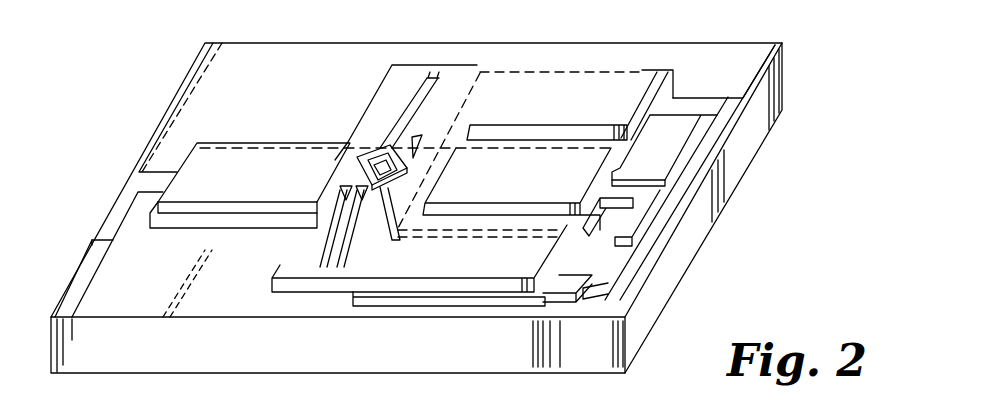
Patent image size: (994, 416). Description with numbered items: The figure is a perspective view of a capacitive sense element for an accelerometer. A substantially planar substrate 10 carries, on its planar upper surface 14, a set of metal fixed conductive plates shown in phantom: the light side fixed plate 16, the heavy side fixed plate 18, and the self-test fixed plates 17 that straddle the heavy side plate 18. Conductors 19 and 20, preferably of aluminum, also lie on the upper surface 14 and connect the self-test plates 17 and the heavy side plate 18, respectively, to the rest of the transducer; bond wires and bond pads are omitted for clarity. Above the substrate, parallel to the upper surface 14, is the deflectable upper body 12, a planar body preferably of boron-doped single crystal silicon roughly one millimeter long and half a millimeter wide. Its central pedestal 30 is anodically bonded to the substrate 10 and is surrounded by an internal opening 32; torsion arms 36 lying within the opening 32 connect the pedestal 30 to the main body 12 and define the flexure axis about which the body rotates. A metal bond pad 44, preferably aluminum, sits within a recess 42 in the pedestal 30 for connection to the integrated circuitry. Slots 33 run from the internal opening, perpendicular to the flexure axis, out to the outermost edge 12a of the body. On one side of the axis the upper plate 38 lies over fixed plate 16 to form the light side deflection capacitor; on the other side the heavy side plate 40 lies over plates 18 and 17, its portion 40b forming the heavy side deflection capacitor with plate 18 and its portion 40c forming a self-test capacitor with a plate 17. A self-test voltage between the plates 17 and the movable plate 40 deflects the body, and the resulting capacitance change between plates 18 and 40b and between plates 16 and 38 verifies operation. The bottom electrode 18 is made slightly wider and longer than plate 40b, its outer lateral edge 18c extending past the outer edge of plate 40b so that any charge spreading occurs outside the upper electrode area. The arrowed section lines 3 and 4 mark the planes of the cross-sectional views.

The substrate 10 is at (656, 320).
The deflectable upper body 12 is at (385, 78).
The outermost edge of the deflectable upper body 12a is at (652, 128).
The upper surface of substrate 14 is at (100, 297).
The fixed conductive plate (light side) 16 is at (301, 137).
The self-test fixed conductive plates 17 is at (527, 300).
The fixed conductive plate (heavy side) 18 is at (690, 125).
The outer lateral edge of bottom electrode 18c is at (600, 190).
The conductor 19 is at (597, 283).
The conductor 20 is at (667, 183).
The pedestal 30 is at (372, 157).
The internal opening 32 is at (380, 190).
The slots 33 is at (780, 45).
The torsion arms 36 is at (432, 85).
The upper plate (light side) 38 is at (214, 150).
The heavy side upper plate 40 is at (655, 60).
The heavy side deflection plate portion 40b is at (585, 180).
The self-test plate portion 40c is at (507, 265).
The recess of pedestal 42 is at (303, 215).
The metal bond pad 44 is at (380, 170).
The section line 3 is at (447, 55).
The section line 4 is at (564, 55).